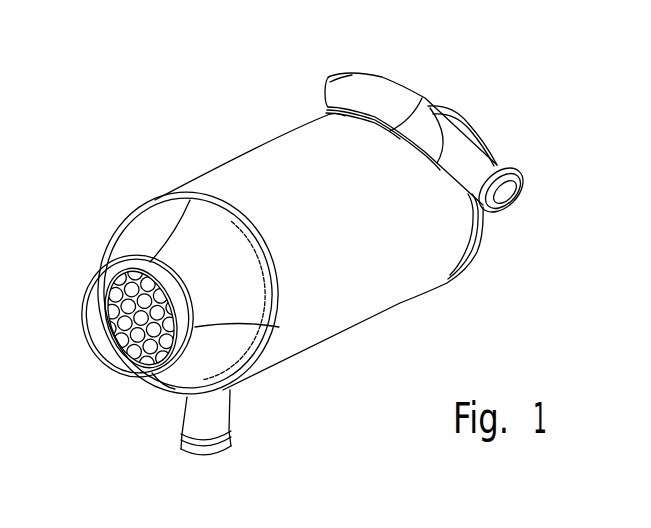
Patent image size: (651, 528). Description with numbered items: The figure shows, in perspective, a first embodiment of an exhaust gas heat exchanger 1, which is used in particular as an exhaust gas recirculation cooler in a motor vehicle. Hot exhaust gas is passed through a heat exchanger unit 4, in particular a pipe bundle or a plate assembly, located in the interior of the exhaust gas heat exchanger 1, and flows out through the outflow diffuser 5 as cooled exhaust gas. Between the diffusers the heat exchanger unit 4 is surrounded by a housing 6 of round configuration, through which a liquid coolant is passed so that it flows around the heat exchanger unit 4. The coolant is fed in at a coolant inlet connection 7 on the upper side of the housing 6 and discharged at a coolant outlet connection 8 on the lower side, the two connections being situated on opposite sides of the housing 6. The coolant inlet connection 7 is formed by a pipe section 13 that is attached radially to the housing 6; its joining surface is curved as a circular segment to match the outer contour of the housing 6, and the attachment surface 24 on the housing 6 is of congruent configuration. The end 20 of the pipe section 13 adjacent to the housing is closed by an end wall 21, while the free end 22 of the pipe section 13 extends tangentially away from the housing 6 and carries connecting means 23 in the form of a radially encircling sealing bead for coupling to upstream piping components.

The exhaust gas heat exchanger 1 is at (155, 96).
The heat exchanger unit 4 is at (108, 321).
The outflow diffuser 5 is at (113, 247).
The housing 6 is at (350, 316).
The coolant inlet connection 7 is at (404, 73).
The coolant outlet connection 8 is at (244, 420).
The pipe section 13 is at (424, 103).
The end of the pipe section adjacent to the housing 20 is at (340, 80).
The end wall 21 is at (325, 90).
The free end of the pipe section 22 is at (495, 164).
The connecting means 23 is at (512, 171).
The attachment surface 24 is at (336, 124).